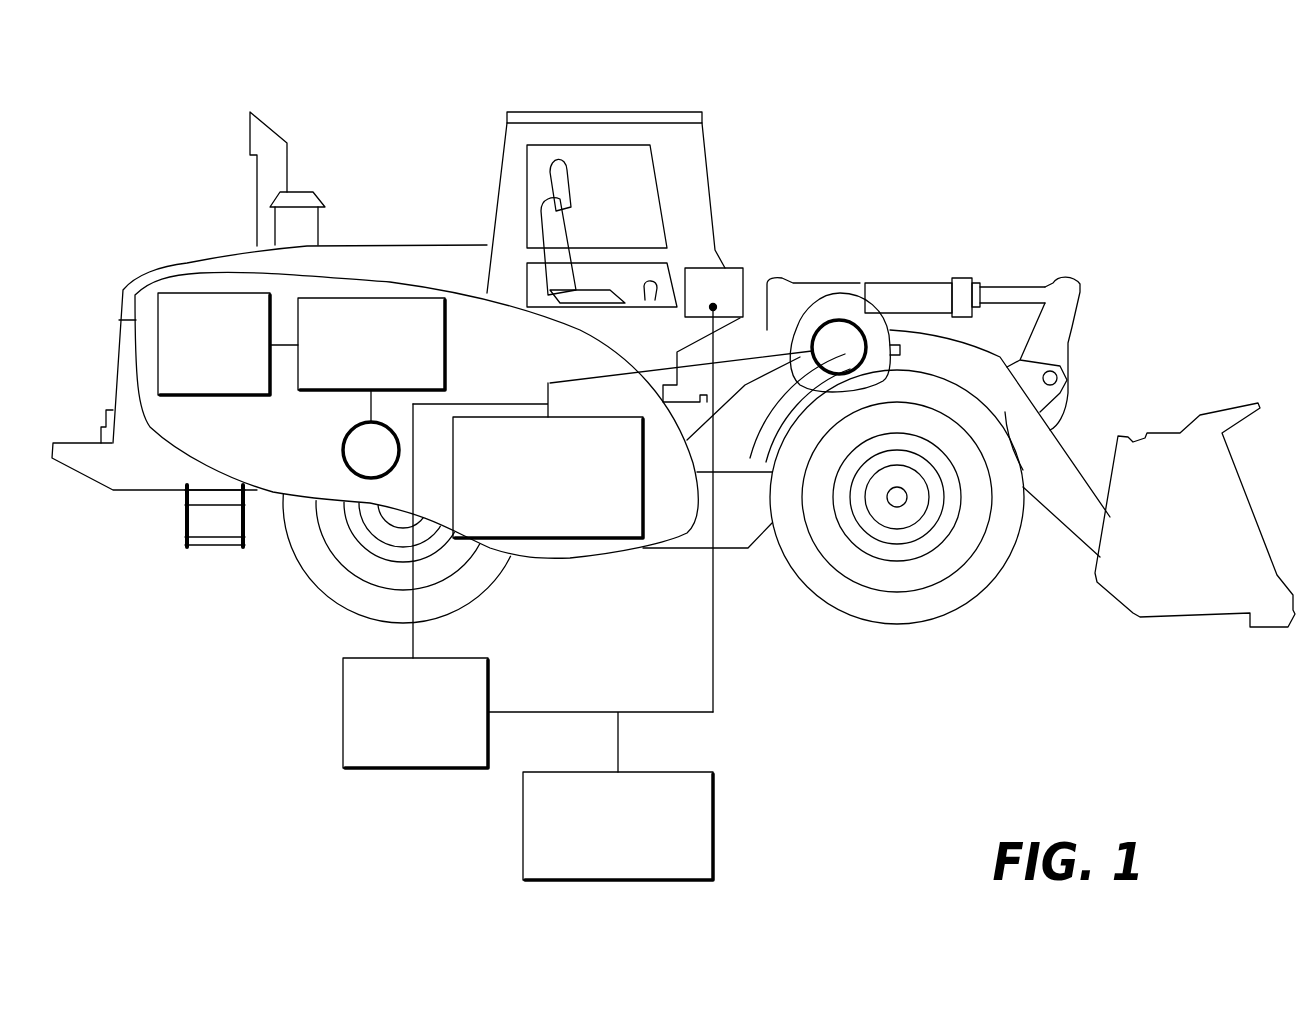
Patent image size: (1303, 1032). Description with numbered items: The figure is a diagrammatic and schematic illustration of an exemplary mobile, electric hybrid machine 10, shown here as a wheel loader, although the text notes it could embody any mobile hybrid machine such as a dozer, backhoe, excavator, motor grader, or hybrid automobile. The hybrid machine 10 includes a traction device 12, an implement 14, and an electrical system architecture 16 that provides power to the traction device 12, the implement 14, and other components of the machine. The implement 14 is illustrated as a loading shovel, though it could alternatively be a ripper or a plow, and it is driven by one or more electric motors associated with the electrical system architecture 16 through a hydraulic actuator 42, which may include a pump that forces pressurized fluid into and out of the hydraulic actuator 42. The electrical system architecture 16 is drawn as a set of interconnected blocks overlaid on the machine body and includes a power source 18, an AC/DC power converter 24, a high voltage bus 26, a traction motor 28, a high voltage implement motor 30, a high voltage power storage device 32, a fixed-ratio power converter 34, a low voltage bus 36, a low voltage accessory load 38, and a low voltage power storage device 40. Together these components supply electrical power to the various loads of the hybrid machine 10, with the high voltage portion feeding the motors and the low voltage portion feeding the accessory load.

The mobile, electric hybrid machine 10 is at (980, 120).
The traction device 12 is at (350, 590).
The implement 14 is at (1190, 535).
The electrical system architecture 16 is at (572, 562).
The power source 18 is at (203, 377).
The AC/DC power converter 24 is at (360, 379).
The high voltage bus 26 is at (458, 404).
The traction motor 28 is at (360, 461).
The high voltage implement motor 30 is at (828, 358).
The high voltage power storage device 32 is at (537, 523).
The fixed-ratio power converter 34 is at (404, 758).
The low voltage bus 36 is at (557, 712).
The low voltage accessory load 38 is at (700, 270).
The low voltage power storage device 40 is at (607, 874).
The hydraulic actuator 42 is at (915, 295).